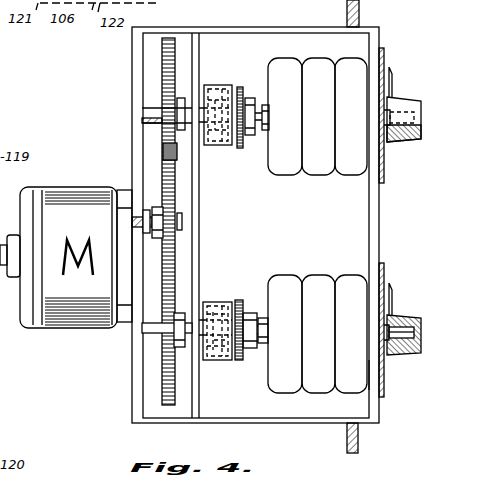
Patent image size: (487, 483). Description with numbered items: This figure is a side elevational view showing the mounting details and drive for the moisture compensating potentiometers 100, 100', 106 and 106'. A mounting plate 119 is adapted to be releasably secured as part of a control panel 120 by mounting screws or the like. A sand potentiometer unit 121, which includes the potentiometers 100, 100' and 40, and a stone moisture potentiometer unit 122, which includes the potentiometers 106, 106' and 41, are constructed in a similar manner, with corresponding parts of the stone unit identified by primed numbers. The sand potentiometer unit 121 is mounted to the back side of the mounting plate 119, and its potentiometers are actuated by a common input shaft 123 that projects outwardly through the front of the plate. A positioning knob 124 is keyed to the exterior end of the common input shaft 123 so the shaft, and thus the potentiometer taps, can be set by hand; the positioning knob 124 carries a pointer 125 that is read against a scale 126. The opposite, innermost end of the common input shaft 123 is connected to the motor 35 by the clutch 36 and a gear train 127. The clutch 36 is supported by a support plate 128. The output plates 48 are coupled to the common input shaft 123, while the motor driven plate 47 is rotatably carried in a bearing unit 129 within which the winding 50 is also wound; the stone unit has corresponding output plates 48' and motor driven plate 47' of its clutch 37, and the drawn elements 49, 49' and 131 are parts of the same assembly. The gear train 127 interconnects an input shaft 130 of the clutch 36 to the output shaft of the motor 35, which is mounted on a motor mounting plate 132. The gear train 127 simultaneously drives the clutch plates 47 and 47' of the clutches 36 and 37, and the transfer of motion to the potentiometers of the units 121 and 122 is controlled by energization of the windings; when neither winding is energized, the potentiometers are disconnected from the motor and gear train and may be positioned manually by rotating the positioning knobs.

The motor 35 is at (80, 329).
The clutch 36 is at (244, 292).
The clutch 37 is at (251, 140).
The potentiometer 40 is at (317, 314).
The potentiometer 41 is at (313, 125).
The motor driven plate 47 is at (223, 305).
The motor driven plate 47' is at (219, 97).
The output plates 48 is at (250, 319).
The output plates 48' is at (256, 98).
The cam 49 is at (222, 367).
The cam 49' is at (222, 143).
The winding 50 is at (219, 301).
The moisture compensating potentiometer 100 is at (348, 318).
The moisture compensating potentiometer 100' is at (317, 319).
The moisture compensating potentiometer 106 is at (339, 133).
The moisture compensating potentiometer 106' is at (297, 133).
The mounting plate 119 is at (380, 213).
The control panel 120 is at (358, 440).
The sand potentiometer unit 121 is at (365, 373).
The stone moisture potentiometer unit 122 is at (365, 155).
The common input shaft 123 is at (405, 331).
The positioning knob 124 is at (400, 318).
The pointer 125 is at (392, 293).
The scale 126 is at (382, 266).
The gear train 127 is at (164, 153).
The support plate 128 is at (200, 221).
The bearing unit 129 is at (240, 361).
The input shaft 130 is at (186, 325).
The coupling 131 is at (151, 222).
The motor mounting plate 132 is at (133, 163).